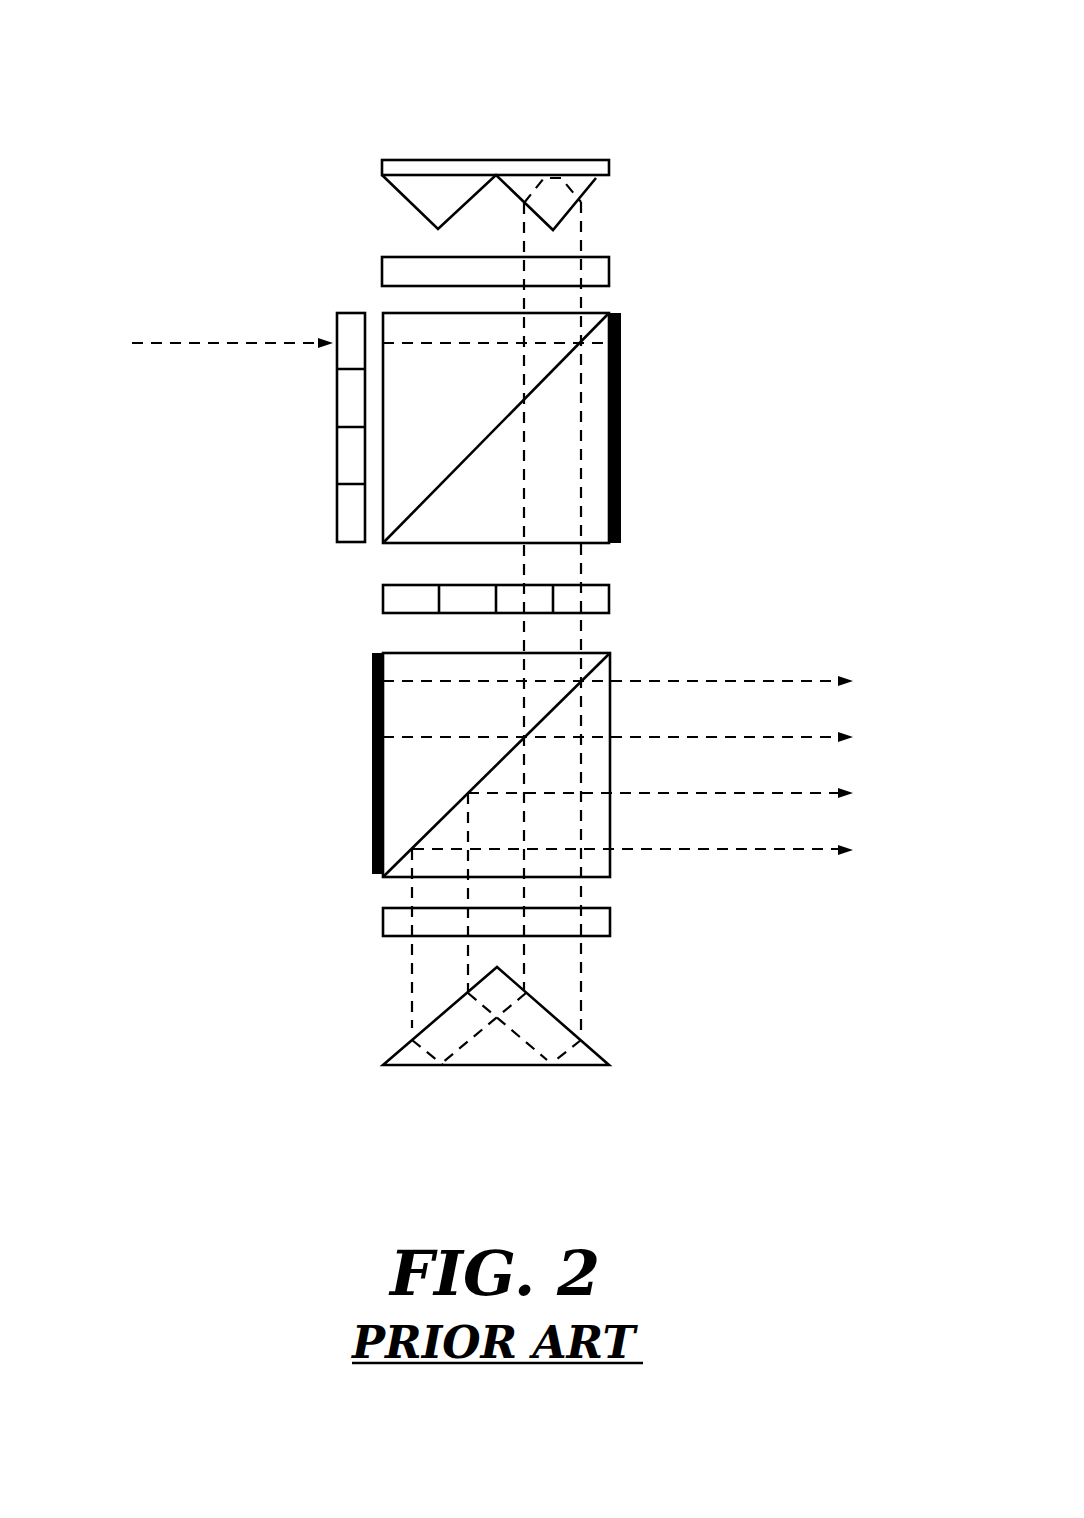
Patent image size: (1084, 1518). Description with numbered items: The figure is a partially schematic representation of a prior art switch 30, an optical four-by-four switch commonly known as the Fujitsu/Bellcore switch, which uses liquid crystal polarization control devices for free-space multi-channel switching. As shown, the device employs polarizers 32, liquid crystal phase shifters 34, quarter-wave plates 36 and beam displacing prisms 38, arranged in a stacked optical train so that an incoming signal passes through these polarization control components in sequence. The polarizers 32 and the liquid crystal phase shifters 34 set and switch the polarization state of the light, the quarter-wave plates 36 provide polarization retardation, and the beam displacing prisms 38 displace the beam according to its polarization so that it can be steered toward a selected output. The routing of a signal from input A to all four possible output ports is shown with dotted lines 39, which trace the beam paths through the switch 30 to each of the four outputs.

The prior art switch 30 is at (767, 122).
The polarizer 32 is at (621, 388).
The liquid crystal phase shifter 34 is at (390, 600).
The quarter-wave plate 36 is at (597, 272).
The beam displacing prism 38 is at (590, 183).
The dotted lines 39 is at (276, 340).